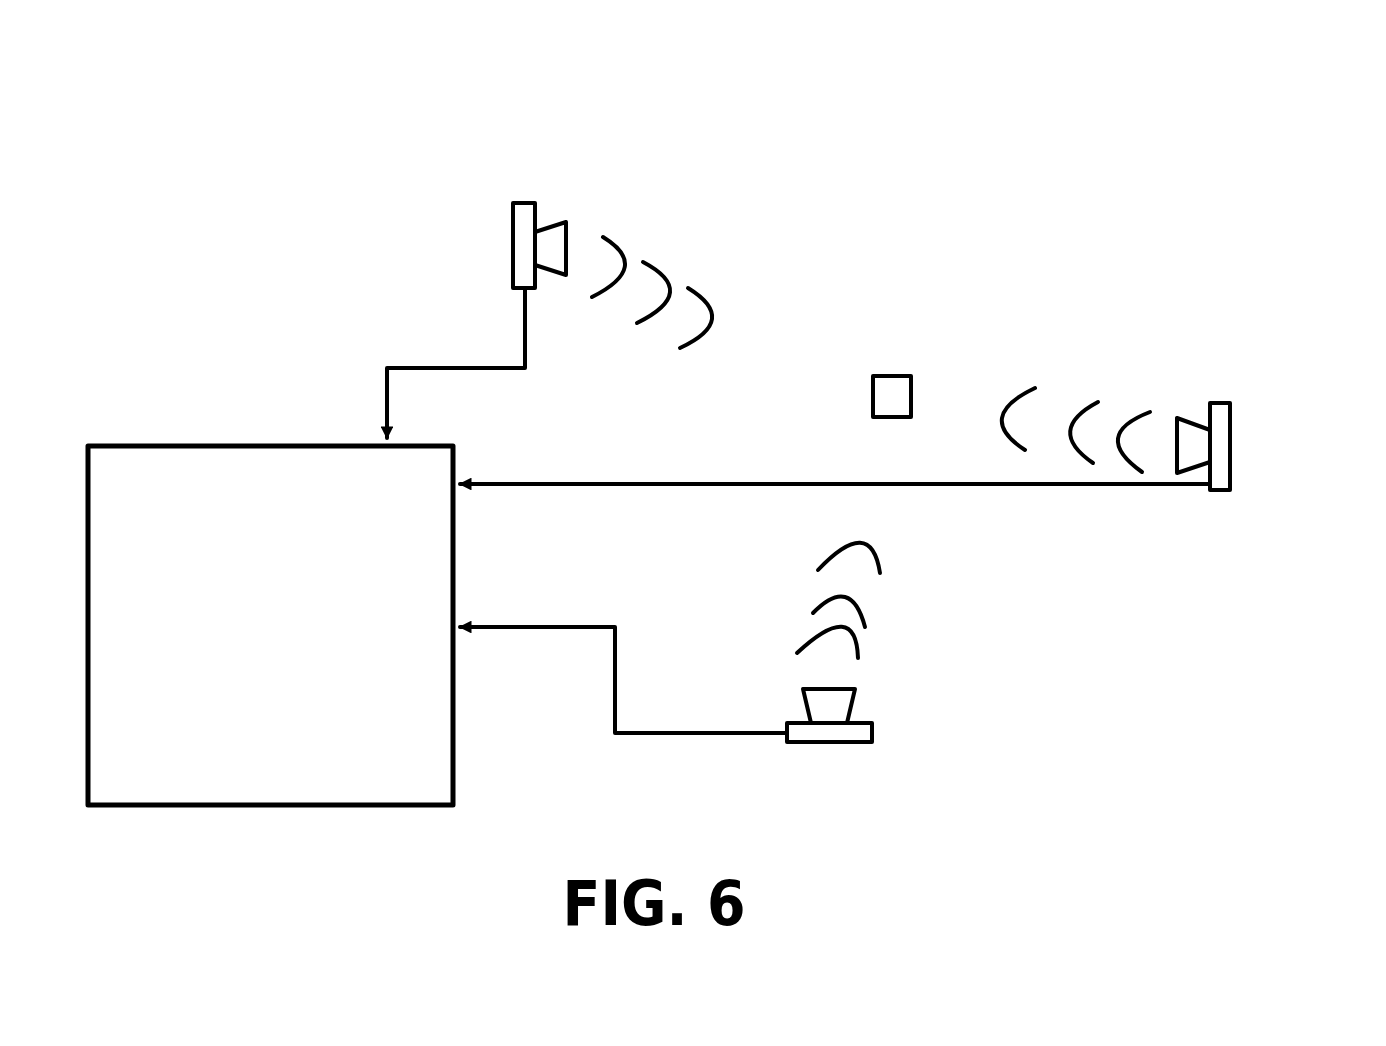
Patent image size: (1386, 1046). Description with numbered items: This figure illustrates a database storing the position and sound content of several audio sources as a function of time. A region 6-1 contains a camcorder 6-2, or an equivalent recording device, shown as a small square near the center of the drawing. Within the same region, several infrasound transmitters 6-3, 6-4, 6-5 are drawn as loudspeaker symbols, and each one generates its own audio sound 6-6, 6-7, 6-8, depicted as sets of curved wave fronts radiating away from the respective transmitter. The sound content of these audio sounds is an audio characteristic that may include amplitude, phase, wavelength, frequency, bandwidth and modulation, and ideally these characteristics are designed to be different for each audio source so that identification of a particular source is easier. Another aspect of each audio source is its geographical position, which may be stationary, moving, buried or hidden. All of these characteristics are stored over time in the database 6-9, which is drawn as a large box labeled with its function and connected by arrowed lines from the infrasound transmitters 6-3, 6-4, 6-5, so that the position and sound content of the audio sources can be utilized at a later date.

The region 6-1 is at (820, 168).
The camcorder 6-2 is at (880, 372).
The infrasound transmitter 6-3 is at (506, 245).
The infrasound transmitter 6-4 is at (798, 702).
The infrasound transmitter 6-5 is at (1237, 445).
The audio sound 6-6 is at (609, 236).
The audio sound 6-7 is at (812, 614).
The audio sound 6-8 is at (1090, 395).
The database 6-9 is at (190, 438).